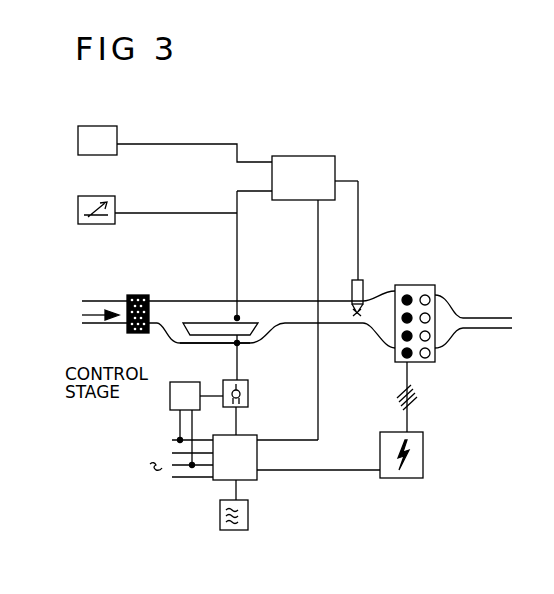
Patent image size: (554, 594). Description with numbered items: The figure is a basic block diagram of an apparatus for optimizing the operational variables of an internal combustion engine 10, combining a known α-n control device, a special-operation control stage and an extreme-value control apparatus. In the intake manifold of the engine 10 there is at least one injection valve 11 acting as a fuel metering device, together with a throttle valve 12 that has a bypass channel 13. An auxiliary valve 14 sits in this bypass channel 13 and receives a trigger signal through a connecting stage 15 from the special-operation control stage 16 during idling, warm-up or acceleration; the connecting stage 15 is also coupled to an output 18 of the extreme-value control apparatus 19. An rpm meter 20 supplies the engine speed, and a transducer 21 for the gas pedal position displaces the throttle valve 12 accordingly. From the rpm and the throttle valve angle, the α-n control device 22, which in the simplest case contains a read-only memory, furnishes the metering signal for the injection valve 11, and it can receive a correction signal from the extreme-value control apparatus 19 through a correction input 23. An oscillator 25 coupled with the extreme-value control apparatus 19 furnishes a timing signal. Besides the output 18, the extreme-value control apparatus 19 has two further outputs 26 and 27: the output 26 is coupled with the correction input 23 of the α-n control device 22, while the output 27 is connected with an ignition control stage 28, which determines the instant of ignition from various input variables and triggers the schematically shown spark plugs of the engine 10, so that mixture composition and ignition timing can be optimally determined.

The internal combustion engine 10 is at (416, 285).
The injection valve 11 is at (363, 294).
The throttle valve 12 is at (240, 317).
The bypass channel 13 is at (206, 344).
The auxiliary valve 14 is at (238, 345).
The connecting stage 15 is at (249, 395).
The special-operation control stage 16 is at (170, 397).
The output 18 is at (237, 433).
The extreme-value control apparatus 19 is at (240, 485).
The rpm meter 20 is at (117, 128).
The transducer 21 is at (112, 197).
The α-n control device 22 is at (316, 156).
The correction input 23 is at (317, 208).
The oscillator 25 is at (220, 514).
The output 26 is at (257, 440).
The output 27 is at (258, 473).
The ignition control stage 28 is at (423, 462).